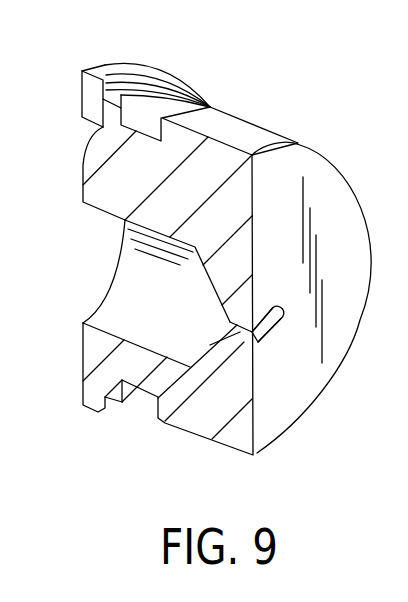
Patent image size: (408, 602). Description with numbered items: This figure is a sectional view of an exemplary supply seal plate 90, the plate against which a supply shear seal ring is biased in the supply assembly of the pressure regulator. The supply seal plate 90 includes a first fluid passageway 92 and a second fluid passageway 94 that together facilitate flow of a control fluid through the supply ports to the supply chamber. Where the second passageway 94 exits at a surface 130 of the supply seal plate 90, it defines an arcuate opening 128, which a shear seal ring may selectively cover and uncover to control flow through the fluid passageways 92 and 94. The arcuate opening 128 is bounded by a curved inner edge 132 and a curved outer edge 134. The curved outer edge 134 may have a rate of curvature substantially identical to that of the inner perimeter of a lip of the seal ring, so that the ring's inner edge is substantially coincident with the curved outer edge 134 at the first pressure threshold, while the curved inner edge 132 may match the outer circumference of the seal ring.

The supply seal plate 90 is at (113, 65).
The first fluid passageway 92 is at (130, 293).
The second fluid passageway 94 is at (232, 332).
The arcuate opening 128 is at (283, 310).
The surface 130 is at (315, 163).
The curved inner edge 132 is at (270, 328).
The curved outer edge 134 is at (267, 343).